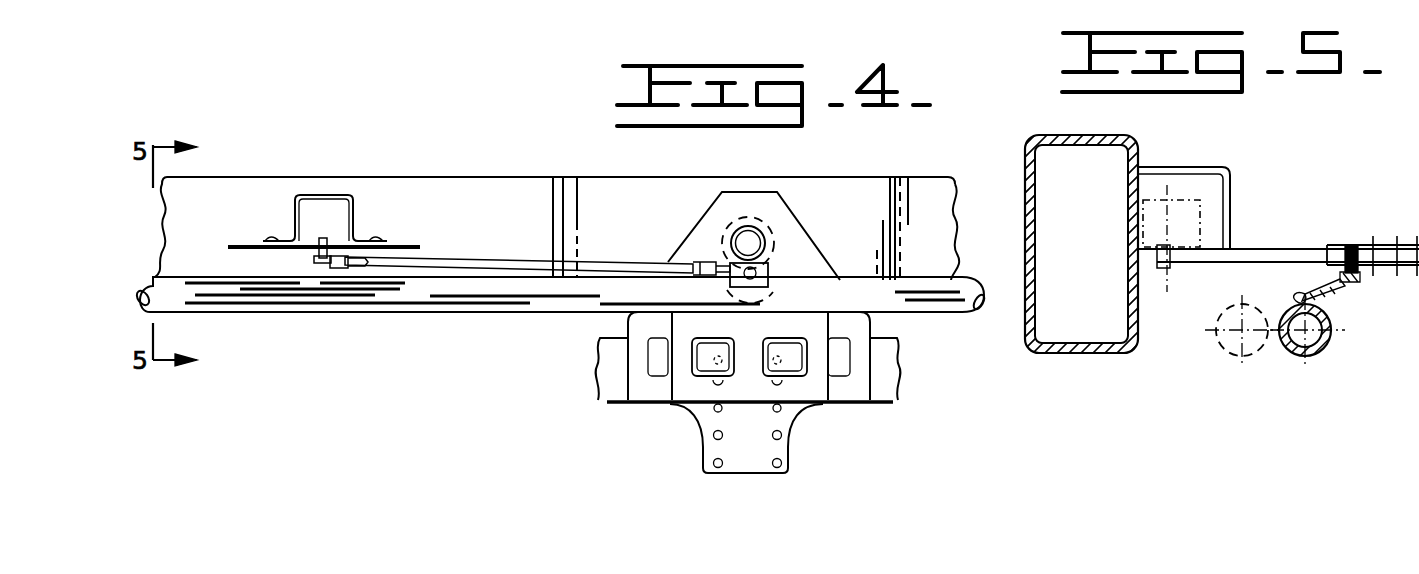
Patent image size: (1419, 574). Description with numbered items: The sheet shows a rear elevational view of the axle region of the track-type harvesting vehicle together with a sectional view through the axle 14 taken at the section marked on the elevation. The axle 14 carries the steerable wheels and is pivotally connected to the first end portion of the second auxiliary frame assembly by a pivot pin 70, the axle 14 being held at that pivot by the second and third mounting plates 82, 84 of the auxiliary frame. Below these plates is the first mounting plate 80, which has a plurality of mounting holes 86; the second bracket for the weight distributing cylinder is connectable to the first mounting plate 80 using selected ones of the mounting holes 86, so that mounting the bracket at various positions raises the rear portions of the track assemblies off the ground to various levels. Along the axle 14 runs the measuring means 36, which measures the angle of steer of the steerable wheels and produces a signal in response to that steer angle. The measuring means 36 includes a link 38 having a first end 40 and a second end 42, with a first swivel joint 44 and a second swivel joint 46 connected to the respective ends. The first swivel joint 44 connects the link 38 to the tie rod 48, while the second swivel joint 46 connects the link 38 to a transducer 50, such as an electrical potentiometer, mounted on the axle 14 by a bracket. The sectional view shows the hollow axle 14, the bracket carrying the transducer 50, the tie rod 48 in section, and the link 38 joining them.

In FIG. 5, the axle 14 is at (1073, 347).
In FIG. 4, the measuring means 36 is at (376, 328).
In FIG. 4, the link 38 is at (530, 262).
In FIG. 5, the link 38 is at (1342, 285).
In FIG. 4, the first end 40 is at (698, 274).
In FIG. 4, the second end 42 is at (378, 262).
In FIG. 4, the first swivel joint 44 is at (776, 293).
In FIG. 4, the second swivel joint 46 is at (336, 268).
In FIG. 4, the tie rod 48 is at (496, 303).
In FIG. 5, the tie rod 48 is at (1300, 353).
In FIG. 4, the transducer 50 is at (355, 212).
In FIG. 5, the transducer 50 is at (1197, 218).
In FIG. 4, the pivot pin 70 is at (756, 249).
In FIG. 4, the first mounting plate 80 is at (781, 446).
In FIG. 4, the second mounting plate 82 is at (865, 330).
In FIG. 4, the third mounting plate 84 is at (710, 234).
In FIG. 4, the mounting holes 86 is at (712, 463).